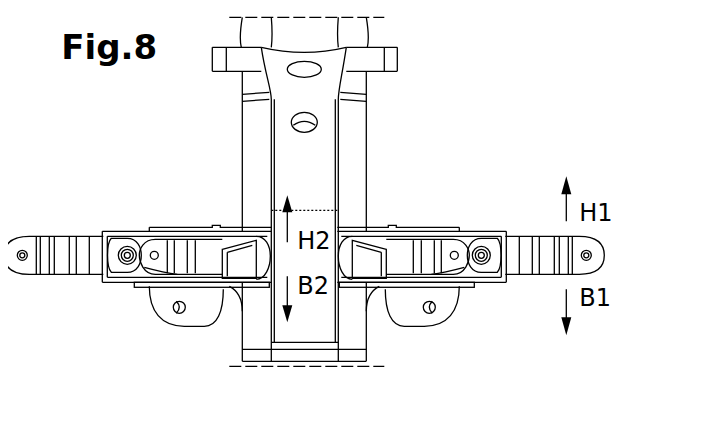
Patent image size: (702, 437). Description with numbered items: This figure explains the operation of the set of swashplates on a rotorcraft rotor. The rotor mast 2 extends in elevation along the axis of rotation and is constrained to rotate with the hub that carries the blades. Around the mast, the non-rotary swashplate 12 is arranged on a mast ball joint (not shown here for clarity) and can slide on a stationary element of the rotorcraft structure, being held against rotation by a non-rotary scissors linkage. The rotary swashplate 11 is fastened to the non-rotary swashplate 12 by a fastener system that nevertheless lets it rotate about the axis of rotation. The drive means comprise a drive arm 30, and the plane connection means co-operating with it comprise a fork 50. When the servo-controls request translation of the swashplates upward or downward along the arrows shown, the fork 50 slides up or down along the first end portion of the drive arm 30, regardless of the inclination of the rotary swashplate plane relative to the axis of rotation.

The rotor mast 2 is at (367, 140).
The drive arm 30 is at (330, 177).
The non-rotary swashplate 12 is at (177, 218).
The fork 50 is at (357, 250).
The rotary swashplate 11 is at (93, 237).